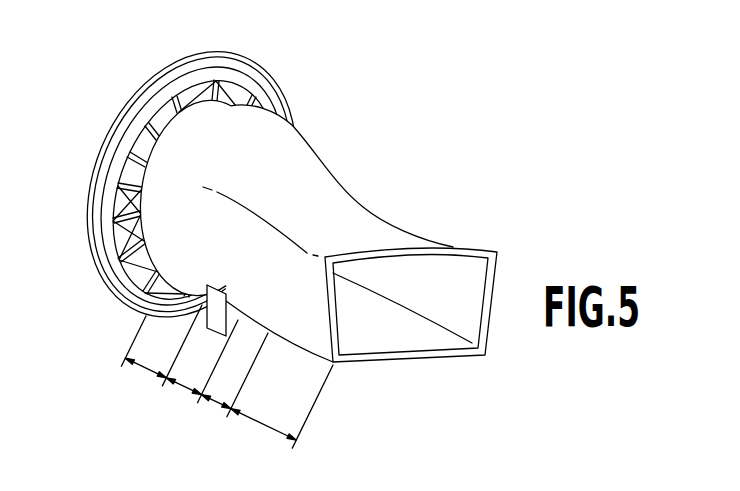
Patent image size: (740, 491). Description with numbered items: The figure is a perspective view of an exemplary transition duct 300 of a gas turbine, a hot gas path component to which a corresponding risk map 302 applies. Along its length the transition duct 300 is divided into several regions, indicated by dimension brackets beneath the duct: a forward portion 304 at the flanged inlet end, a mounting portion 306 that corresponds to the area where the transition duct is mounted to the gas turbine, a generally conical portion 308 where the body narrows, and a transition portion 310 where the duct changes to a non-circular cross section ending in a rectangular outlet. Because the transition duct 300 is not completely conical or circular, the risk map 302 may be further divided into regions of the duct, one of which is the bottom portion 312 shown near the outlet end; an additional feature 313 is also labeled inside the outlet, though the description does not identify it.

The transition duct 300 is at (130, 93).
The risk map 302 is at (616, 486).
The forward portion 304 is at (143, 367).
The mounting portion 306 is at (183, 386).
The generally conical portion 308 is at (215, 402).
The transition portion 310 is at (257, 422).
The bottom portion 312 is at (377, 363).
The inner wall 313 is at (464, 316).